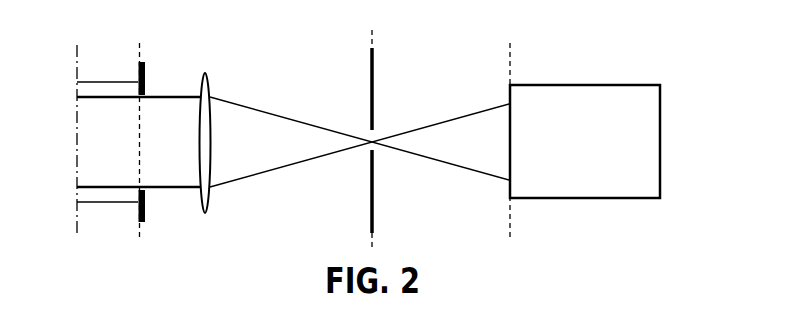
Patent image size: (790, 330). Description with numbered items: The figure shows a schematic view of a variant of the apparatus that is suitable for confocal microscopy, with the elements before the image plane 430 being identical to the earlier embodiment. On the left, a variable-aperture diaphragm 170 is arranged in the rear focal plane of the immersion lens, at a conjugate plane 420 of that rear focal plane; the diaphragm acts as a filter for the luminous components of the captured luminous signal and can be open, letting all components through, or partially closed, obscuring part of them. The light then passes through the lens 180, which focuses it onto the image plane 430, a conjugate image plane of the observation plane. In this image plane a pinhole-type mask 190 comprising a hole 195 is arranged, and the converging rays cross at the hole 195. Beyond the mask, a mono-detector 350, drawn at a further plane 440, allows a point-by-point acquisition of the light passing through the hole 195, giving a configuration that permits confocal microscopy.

The variable-aperture diaphragm 170 is at (145, 66).
The lens 180 is at (205, 74).
The pinhole-type mask 190 is at (374, 95).
The hole 195 is at (375, 145).
The mono-detector 350 is at (636, 84).
The conjugate plane of the rear focal plane of the immersion lens 420 is at (141, 226).
The image plane 430 is at (370, 44).
The detector plane 440 is at (508, 62).